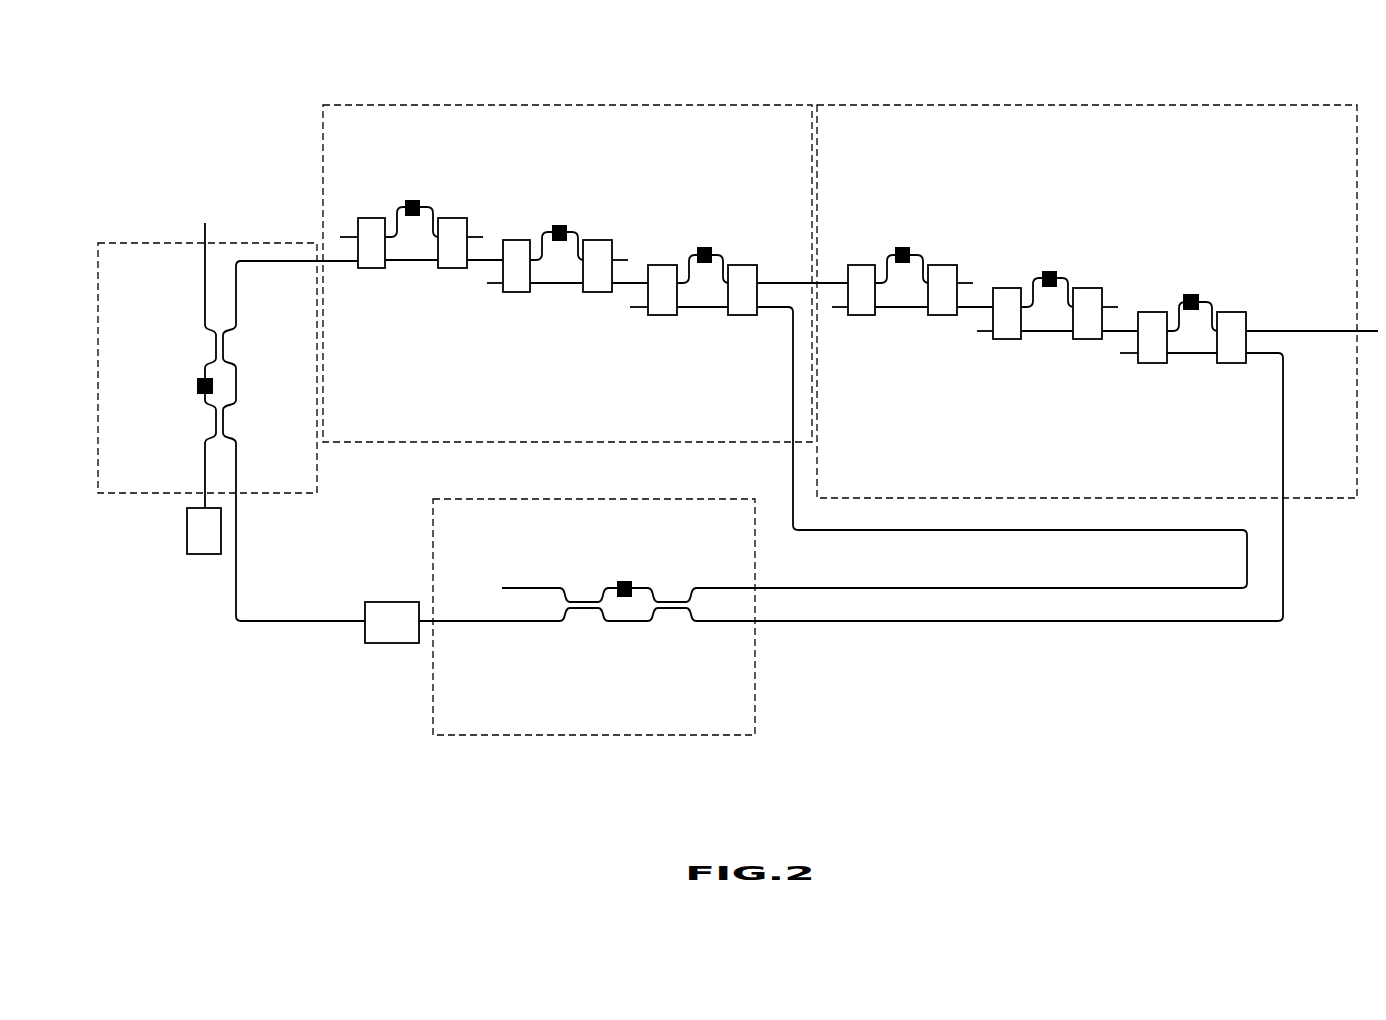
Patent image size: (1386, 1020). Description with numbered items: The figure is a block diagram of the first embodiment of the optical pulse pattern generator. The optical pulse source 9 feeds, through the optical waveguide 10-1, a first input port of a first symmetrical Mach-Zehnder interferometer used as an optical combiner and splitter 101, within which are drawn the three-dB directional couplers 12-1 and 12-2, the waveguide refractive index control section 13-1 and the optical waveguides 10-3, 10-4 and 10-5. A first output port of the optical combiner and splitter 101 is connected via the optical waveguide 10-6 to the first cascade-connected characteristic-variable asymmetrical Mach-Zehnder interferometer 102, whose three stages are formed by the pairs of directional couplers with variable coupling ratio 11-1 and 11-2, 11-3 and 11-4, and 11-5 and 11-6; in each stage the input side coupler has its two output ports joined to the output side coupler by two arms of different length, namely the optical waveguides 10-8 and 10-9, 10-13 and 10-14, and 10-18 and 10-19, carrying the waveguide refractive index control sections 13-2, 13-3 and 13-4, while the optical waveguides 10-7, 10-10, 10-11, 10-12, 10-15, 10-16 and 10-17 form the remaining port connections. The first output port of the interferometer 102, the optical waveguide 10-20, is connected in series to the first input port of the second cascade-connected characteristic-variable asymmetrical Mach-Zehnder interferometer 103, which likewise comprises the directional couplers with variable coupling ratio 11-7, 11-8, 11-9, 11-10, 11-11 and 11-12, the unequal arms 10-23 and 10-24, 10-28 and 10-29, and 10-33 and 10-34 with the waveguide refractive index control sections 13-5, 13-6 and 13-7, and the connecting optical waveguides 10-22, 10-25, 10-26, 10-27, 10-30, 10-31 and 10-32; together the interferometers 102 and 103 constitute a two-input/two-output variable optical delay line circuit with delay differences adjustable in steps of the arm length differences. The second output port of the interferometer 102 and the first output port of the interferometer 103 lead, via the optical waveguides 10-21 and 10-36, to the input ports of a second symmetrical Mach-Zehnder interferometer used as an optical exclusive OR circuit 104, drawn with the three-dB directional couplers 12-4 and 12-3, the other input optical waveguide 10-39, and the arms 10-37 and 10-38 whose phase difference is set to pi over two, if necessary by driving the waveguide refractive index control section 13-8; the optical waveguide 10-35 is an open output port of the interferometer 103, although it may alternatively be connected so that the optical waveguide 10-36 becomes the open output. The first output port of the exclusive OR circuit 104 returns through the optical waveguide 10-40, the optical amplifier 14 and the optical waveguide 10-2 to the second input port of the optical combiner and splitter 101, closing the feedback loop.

The optical pulse source 9 is at (203, 554).
The optical amplifier 14 is at (390, 602).
The optical combiner and splitter 101 is at (152, 243).
The first cascade-connected characteristic-variable asymmetrical Mach-Zehnder interf 102 is at (420, 105).
The second cascade-connected characteristic-variable asymmetrical Mach-Zehnder inter 103 is at (915, 105).
The optical exclusive OR circuit 104 is at (757, 663).
The optical waveguide 10-1 is at (205, 474).
The optical waveguide 10-2 is at (236, 466).
The optical waveguide 10-3 is at (203, 398).
The optical waveguide 10-4 is at (236, 384).
The optical waveguide 10-5 is at (204, 289).
The optical waveguide 10-6 is at (237, 266).
The optical waveguide 10-7 is at (345, 237).
The optical waveguide 10-8 is at (396, 210).
The optical waveguide 10-9 is at (410, 261).
The optical waveguide 10-10 is at (480, 237).
The optical waveguide 10-11 is at (478, 262).
The optical waveguide 10-12 is at (490, 284).
The optical waveguide 10-13 is at (540, 235).
The optical waveguide 10-14 is at (553, 284).
The optical waveguide 10-15 is at (626, 260).
The optical waveguide 10-16 is at (627, 285).
The optical waveguide 10-17 is at (640, 308).
The optical waveguide 10-18 is at (688, 258).
The optical waveguide 10-19 is at (703, 308).
The optical waveguide 10-20 is at (790, 283).
The optical waveguide 10-21 is at (770, 308).
The optical waveguide 10-22 is at (835, 308).
The optical waveguide 10-23 is at (884, 258).
The optical waveguide 10-24 is at (900, 308).
The optical waveguide 10-25 is at (972, 283).
The optical waveguide 10-26 is at (970, 308).
The optical waveguide 10-27 is at (985, 332).
The optical waveguide 10-28 is at (1033, 280).
The optical waveguide 10-29 is at (1045, 332).
The optical waveguide 10-30 is at (1118, 307).
The optical waveguide 10-31 is at (1115, 333).
The optical waveguide 10-32 is at (1125, 354).
The optical waveguide 10-33 is at (1178, 305).
The optical waveguide 10-34 is at (1192, 354).
The optical waveguide 10-35 is at (1305, 331).
The optical waveguide 10-36 is at (1283, 395).
The optical waveguide 10-37 is at (650, 588).
The optical waveguide 10-38 is at (622, 622).
The optical waveguide 10-39 is at (527, 588).
The optical waveguide 10-40 is at (485, 622).
The directional coupler with variable coupling ratio 11-1 is at (372, 268).
The directional coupler with variable coupling ratio 11-2 is at (452, 218).
The directional coupler with variable coupling ratio 11-3 is at (518, 292).
The directional coupler with variable coupling ratio 11-4 is at (598, 240).
The directional coupler with variable coupling ratio 11-5 is at (665, 315).
The directional coupler with variable coupling ratio 11-6 is at (743, 265).
The directional coupler with variable coupling ratio 11-7 is at (862, 315).
The directional coupler with variable coupling ratio 11-8 is at (942, 265).
The directional coupler with variable coupling ratio 11-9 is at (1008, 339).
The directional coupler with variable coupling ratio 11-10 is at (1088, 288).
The directional coupler with variable coupling ratio 11-11 is at (1155, 363).
The directional coupler with variable coupling ratio 11-12 is at (1232, 312).
The 3-dB directional coupler 12-1 is at (223, 431).
The 3-dB directional coupler 12-2 is at (223, 347).
The 3-dB directional coupler 12-3 is at (667, 612).
The 3-dB directional coupler 12-4 is at (580, 610).
The waveguide refractive index control section 13-1 is at (197, 387).
The waveguide refractive index control section 13-2 is at (412, 200).
The waveguide refractive index control section 13-3 is at (557, 225).
The waveguide refractive index control section 13-4 is at (707, 247).
The waveguide refractive index control section 13-5 is at (902, 247).
The waveguide refractive index control section 13-6 is at (1050, 271).
The waveguide refractive index control section 13-7 is at (1192, 294).
The waveguide refractive index control section 13-8 is at (625, 581).